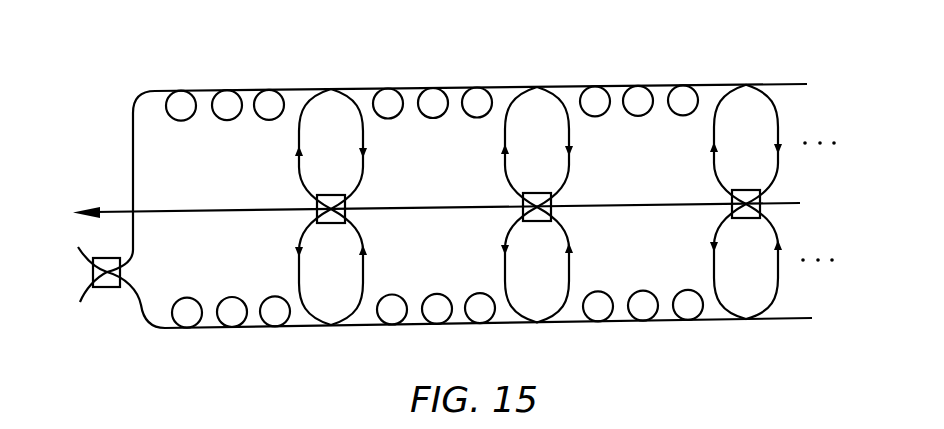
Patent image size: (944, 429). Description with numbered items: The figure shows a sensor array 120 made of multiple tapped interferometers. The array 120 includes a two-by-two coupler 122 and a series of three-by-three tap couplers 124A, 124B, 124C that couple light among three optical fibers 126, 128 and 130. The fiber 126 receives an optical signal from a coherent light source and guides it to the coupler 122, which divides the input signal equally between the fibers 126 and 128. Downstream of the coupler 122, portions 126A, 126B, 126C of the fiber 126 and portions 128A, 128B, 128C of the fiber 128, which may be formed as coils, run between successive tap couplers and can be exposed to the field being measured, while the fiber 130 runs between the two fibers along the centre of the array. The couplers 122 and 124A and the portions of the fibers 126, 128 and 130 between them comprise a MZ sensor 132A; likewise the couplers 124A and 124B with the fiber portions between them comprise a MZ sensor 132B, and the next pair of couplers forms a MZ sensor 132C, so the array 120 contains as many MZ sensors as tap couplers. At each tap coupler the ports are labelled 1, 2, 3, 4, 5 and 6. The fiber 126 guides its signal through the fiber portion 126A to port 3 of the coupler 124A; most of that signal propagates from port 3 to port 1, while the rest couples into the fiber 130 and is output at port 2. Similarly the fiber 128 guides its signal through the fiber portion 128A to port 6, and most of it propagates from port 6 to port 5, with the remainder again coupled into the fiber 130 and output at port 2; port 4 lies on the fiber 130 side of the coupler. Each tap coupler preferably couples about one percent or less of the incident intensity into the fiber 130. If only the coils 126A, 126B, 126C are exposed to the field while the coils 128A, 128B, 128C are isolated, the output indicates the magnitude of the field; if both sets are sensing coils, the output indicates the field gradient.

The sensor array 120 is at (295, 348).
The 2x2 coupler 122 is at (105, 290).
The 3x3 tap coupler 124A is at (331, 228).
The 3x3 tap coupler 124B is at (537, 227).
The 3x3 tap coupler 124C is at (738, 222).
The optical fiber 126 is at (76, 250).
The fiber portion 126A is at (248, 85).
The fiber portion 126B is at (452, 83).
The fiber portion 126C is at (663, 82).
The optical fiber 128 is at (80, 299).
The fiber portion 128A is at (227, 331).
The fiber portion 128B is at (397, 330).
The fiber portion 128C is at (653, 328).
The optical fiber 130 is at (206, 213).
The MZ sensor 132A is at (187, 83).
The MZ sensor 132B is at (390, 83).
The MZ sensor 132C is at (593, 81).
The port 1 is at (312, 190).
The port 2 is at (308, 205).
The port 3 is at (347, 190).
The port 4 is at (354, 204).
The port 5 is at (308, 212).
The port 6 is at (354, 214).